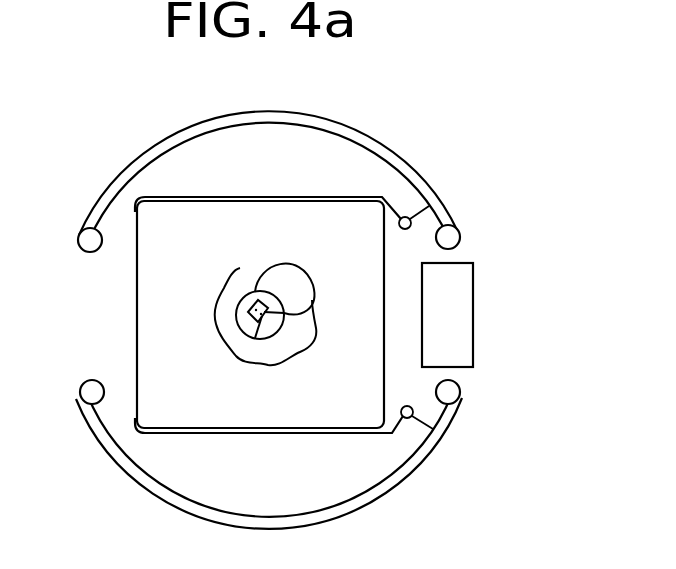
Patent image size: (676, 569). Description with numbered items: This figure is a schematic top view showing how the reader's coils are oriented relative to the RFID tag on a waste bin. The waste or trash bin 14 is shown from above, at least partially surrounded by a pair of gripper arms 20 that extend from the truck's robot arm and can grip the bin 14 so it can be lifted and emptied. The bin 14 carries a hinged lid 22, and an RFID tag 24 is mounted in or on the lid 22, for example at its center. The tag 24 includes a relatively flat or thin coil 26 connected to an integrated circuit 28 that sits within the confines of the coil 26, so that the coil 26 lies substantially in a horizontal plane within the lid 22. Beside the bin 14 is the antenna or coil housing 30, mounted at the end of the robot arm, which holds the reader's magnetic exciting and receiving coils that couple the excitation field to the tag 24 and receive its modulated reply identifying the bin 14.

The waste or trash bin 14 is at (137, 326).
The gripper arms 20 is at (394, 154).
The lid 22 is at (188, 318).
The RFID tag 24 is at (236, 278).
The coil 26 is at (310, 317).
The integrated circuit 28 is at (260, 300).
The antenna or coil housing 30 is at (465, 302).